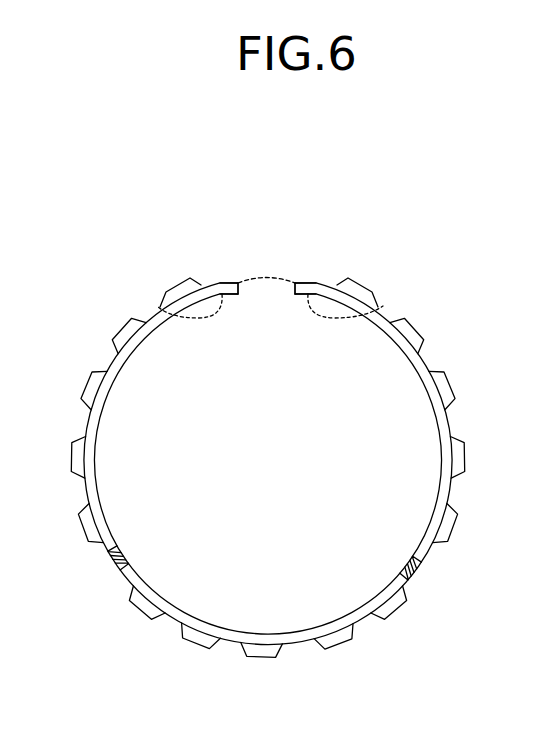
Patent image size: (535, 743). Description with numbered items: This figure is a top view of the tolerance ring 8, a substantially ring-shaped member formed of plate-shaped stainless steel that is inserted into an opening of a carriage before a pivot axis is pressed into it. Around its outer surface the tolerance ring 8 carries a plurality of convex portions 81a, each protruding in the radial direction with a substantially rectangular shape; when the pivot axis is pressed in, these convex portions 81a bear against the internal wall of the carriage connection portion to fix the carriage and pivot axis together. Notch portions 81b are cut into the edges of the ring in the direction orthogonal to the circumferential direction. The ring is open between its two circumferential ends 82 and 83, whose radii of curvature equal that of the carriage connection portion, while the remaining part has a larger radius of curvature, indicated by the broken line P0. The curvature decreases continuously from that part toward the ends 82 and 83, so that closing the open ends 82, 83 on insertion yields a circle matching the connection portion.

The tolerance ring 8 is at (201, 209).
The convex portion 81a is at (357, 285).
The notch portion 81b is at (115, 563).
The end 82 is at (160, 314).
The end 83 is at (376, 314).
The broken line P0 is at (276, 277).